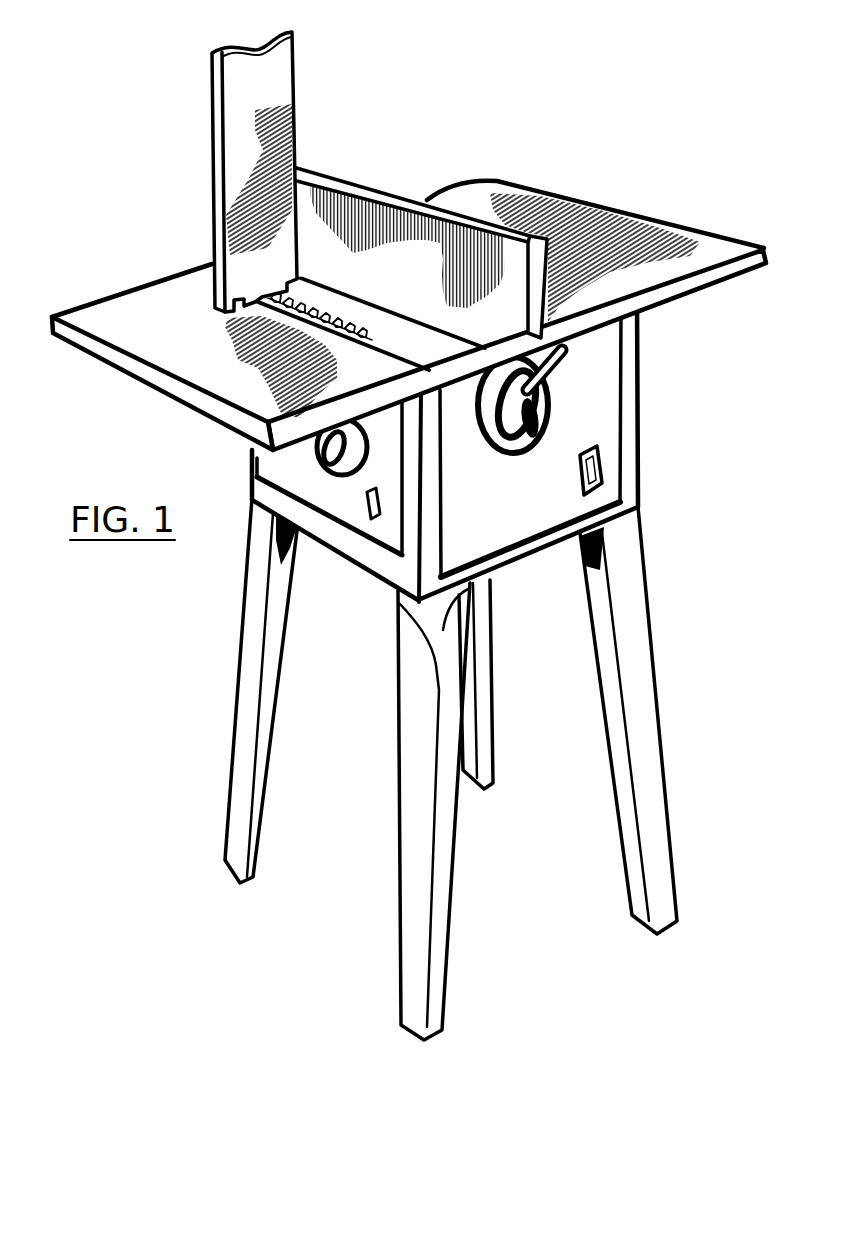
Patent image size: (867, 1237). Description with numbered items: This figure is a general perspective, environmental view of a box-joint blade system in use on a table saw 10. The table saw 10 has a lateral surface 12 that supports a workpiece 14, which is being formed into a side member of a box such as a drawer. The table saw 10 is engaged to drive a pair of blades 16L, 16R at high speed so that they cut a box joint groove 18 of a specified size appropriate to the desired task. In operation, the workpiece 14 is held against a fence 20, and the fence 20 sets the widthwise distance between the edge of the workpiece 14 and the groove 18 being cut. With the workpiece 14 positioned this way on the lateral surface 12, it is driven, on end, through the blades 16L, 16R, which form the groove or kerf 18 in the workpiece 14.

The table saw 10 is at (724, 427).
The lateral surface 12 is at (167, 334).
The workpiece 14 is at (280, 88).
The blade 16L is at (333, 335).
The blade 16R is at (364, 318).
The box joint groove 18 is at (279, 288).
The fence 20 is at (389, 281).